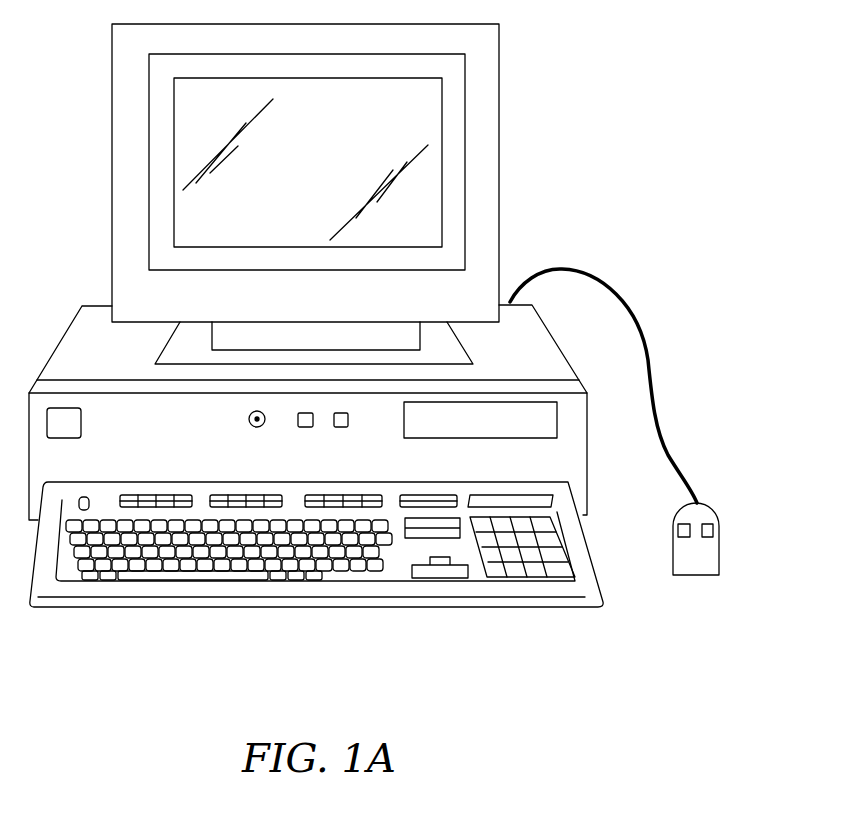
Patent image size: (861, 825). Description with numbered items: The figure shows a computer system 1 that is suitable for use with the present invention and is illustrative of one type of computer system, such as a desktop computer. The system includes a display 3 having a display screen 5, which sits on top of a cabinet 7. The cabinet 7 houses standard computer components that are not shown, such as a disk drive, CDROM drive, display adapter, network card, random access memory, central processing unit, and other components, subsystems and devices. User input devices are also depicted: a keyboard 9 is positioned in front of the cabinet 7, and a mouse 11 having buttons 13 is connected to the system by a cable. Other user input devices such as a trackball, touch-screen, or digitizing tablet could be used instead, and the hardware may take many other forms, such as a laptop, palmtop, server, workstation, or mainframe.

The computer system 1 is at (622, 138).
The display 3 is at (499, 198).
The display screen 5 is at (428, 107).
The cabinet 7 is at (545, 347).
The keyboard 9 is at (353, 610).
The mouse 11 is at (724, 509).
The buttons 13 is at (710, 527).